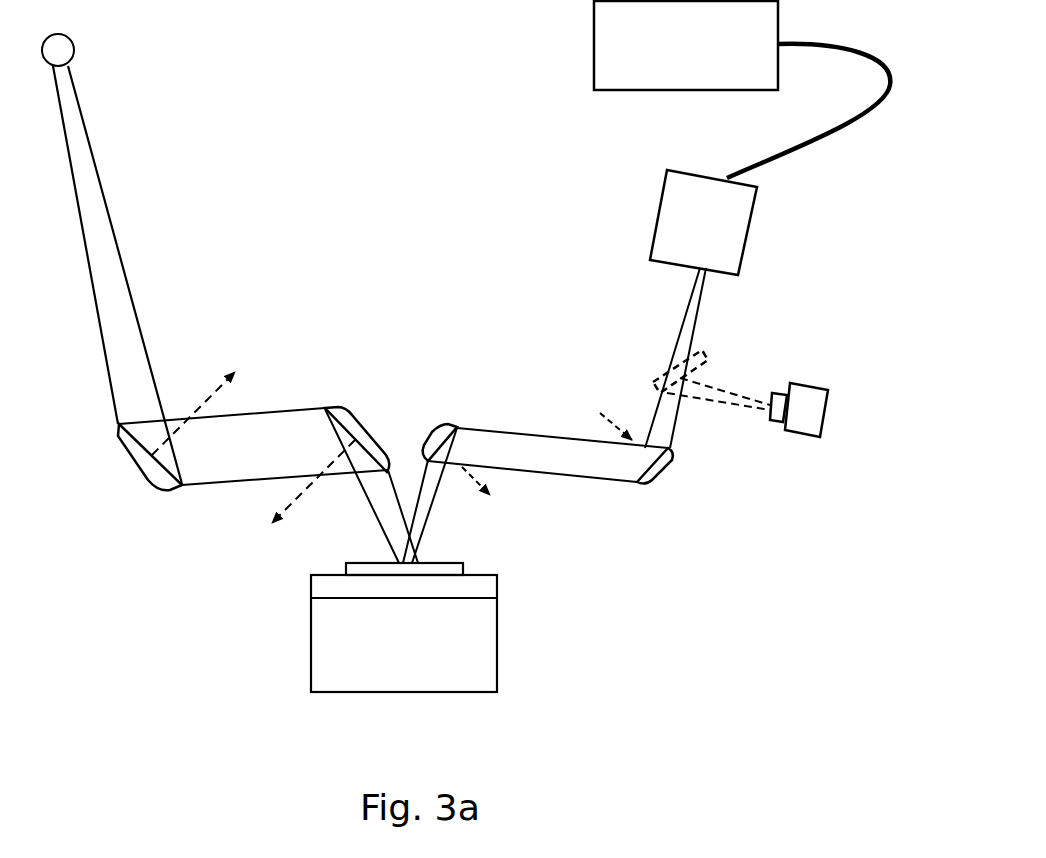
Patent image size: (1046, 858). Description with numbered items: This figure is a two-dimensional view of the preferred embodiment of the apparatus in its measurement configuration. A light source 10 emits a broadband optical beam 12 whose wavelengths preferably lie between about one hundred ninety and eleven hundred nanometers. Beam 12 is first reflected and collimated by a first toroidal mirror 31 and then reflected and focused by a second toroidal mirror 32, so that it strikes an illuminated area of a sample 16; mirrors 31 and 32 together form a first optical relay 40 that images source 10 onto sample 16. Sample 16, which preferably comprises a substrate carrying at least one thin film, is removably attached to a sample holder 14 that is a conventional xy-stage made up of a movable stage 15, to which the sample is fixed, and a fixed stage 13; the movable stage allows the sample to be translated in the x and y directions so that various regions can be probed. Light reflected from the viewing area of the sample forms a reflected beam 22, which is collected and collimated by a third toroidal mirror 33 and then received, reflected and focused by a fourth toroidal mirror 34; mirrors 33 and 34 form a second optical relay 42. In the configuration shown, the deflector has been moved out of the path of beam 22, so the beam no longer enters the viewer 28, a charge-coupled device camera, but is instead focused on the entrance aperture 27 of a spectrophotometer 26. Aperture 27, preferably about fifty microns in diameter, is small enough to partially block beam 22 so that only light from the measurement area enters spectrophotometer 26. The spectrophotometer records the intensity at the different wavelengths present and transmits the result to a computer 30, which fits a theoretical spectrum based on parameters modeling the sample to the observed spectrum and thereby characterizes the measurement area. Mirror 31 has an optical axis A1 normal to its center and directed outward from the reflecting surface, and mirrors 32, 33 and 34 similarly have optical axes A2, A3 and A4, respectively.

The light source 10 is at (73, 42).
The broadband optical beam 12 is at (117, 233).
The fixed stage 13 is at (310, 643).
The sample holder 14 is at (548, 645).
The movable stage 15 is at (310, 587).
The sample 16 is at (462, 572).
The reflected beam 22 is at (557, 475).
The spectrophotometer 26 is at (753, 242).
The entrance aperture 27 is at (710, 270).
The viewer 28 is at (802, 435).
The computer 30 is at (593, 43).
The first toroidal mirror 31 is at (128, 453).
The second toroidal mirror 32 is at (373, 440).
The third toroidal mirror 33 is at (438, 422).
The fourth toroidal mirror 34 is at (665, 473).
The first optical relay 40 is at (292, 350).
The second optical relay 42 is at (548, 362).
The optical axis A1 is at (203, 400).
The optical axis A2 is at (300, 507).
The optical axis A3 is at (468, 473).
The optical axis A4 is at (623, 432).